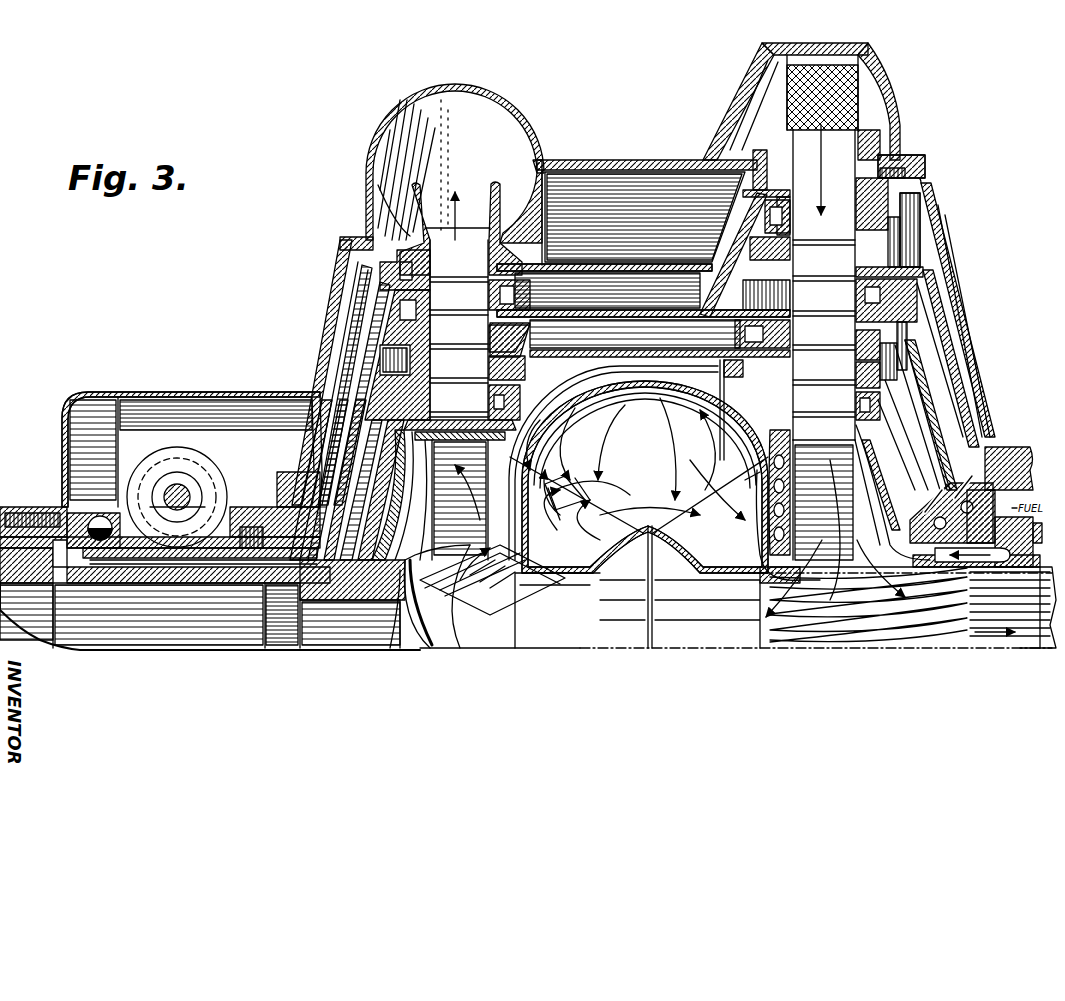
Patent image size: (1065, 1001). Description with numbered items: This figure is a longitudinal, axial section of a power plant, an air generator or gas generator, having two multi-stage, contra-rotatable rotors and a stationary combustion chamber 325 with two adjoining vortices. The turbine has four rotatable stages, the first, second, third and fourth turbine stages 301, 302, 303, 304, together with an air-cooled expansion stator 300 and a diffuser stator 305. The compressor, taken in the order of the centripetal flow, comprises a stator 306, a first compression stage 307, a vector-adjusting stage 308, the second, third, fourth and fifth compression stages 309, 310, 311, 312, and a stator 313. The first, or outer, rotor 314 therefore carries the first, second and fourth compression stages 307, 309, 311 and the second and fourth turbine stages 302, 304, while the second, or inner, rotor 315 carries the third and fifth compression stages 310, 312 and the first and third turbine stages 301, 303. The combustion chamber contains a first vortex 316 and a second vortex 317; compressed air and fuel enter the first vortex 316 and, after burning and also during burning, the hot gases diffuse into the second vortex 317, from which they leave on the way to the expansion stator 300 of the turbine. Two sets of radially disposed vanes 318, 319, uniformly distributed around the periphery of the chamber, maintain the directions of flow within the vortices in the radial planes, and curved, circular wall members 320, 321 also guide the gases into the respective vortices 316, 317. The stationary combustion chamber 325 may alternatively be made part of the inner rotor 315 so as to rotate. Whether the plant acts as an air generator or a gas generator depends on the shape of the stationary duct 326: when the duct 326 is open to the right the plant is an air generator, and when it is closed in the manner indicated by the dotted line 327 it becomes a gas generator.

The expansion stator 300 is at (455, 457).
The first turbine stage 301 is at (459, 397).
The second turbine stage 302 is at (459, 363).
The third turbine stage 303 is at (459, 329).
The fourth turbine stage 304 is at (459, 296).
The diffuser stator 305 is at (459, 260).
The compressor stator 306 is at (838, 173).
The first compression stage 307 is at (842, 230).
The vector-adjusting stage 308 is at (824, 260).
The second compression stage 309 is at (824, 296).
The third compression stage 310 is at (824, 330).
The fourth compression stage 311 is at (824, 365).
The fifth compression stage 312 is at (824, 398).
The compressor stator 313 is at (824, 429).
The first rotor 314 is at (588, 312).
The second rotor 315 is at (688, 350).
The first vortex 316 is at (684, 494).
The second vortex 317 is at (575, 470).
The radially disposed vanes 318 is at (720, 560).
The radially disposed vanes 319 is at (570, 545).
The curved circular wall member 320 is at (665, 560).
The curved circular wall member 321 is at (640, 550).
The stationary combustion chamber 325 is at (638, 466).
The stationary duct 326 is at (995, 640).
The dotted line 327 is at (900, 560).